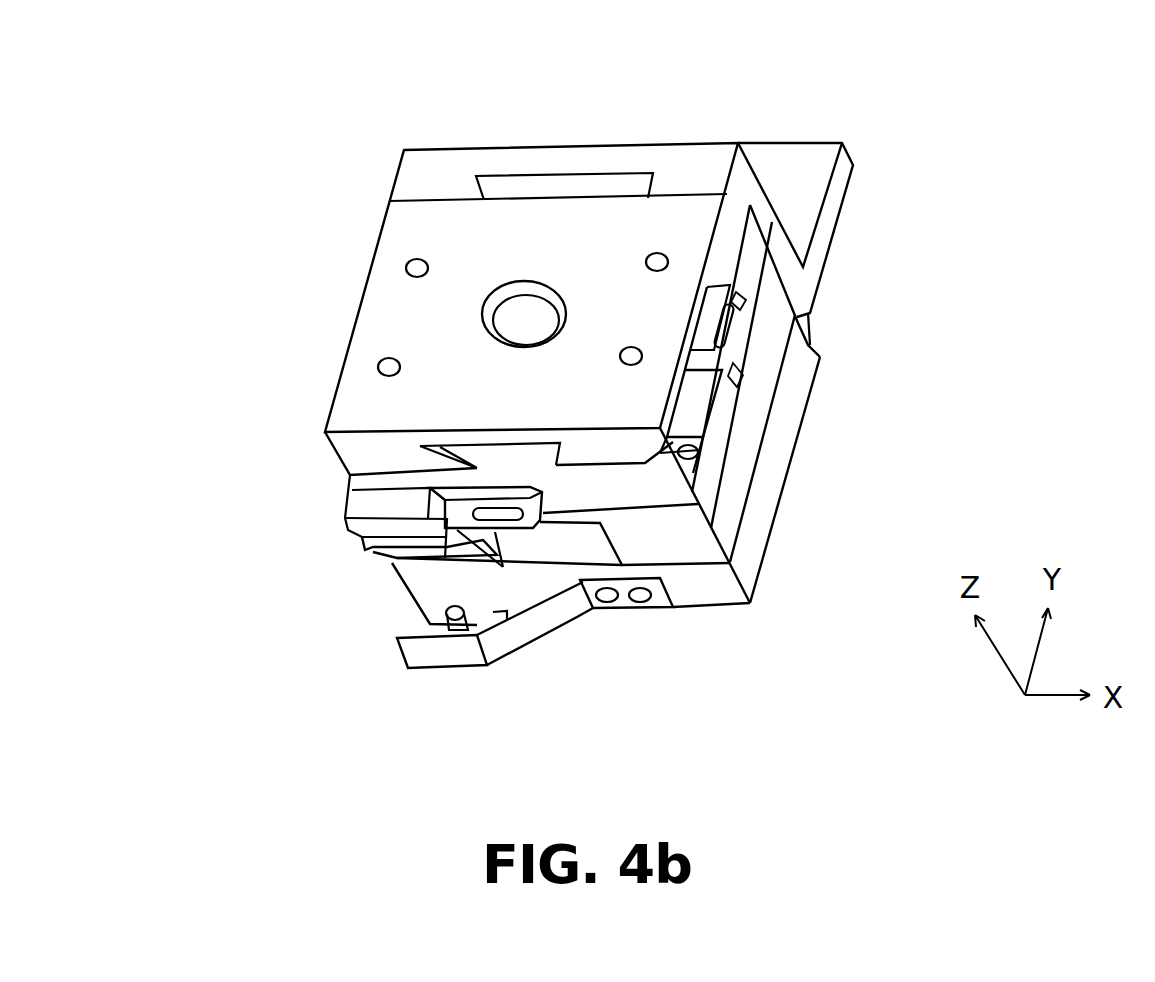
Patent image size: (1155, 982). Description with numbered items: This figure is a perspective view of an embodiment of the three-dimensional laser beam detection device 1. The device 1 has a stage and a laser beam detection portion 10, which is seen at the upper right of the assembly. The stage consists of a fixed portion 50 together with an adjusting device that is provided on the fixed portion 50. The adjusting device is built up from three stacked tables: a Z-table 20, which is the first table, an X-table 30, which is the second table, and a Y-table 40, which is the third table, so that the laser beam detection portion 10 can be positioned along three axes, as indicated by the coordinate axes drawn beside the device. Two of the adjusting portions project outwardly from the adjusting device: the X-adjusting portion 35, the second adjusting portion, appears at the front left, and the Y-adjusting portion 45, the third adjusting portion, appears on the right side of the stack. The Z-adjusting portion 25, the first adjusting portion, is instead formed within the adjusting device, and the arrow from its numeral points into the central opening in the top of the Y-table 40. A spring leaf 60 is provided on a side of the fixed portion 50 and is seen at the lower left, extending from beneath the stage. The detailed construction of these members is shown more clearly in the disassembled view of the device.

The three-dimensional laser beam detection device 1 is at (156, 87).
The laser beam detection portion 10 is at (835, 205).
The Z-table 20 is at (690, 550).
The Z-adjusting portion 25 is at (530, 328).
The X-table 30 is at (752, 277).
The X-adjusting portion 35 is at (360, 537).
The Y-table 40 is at (350, 453).
The Y-adjusting portion 45 is at (720, 421).
The fixed portion 50 is at (775, 473).
The spring leaf 60 is at (410, 650).